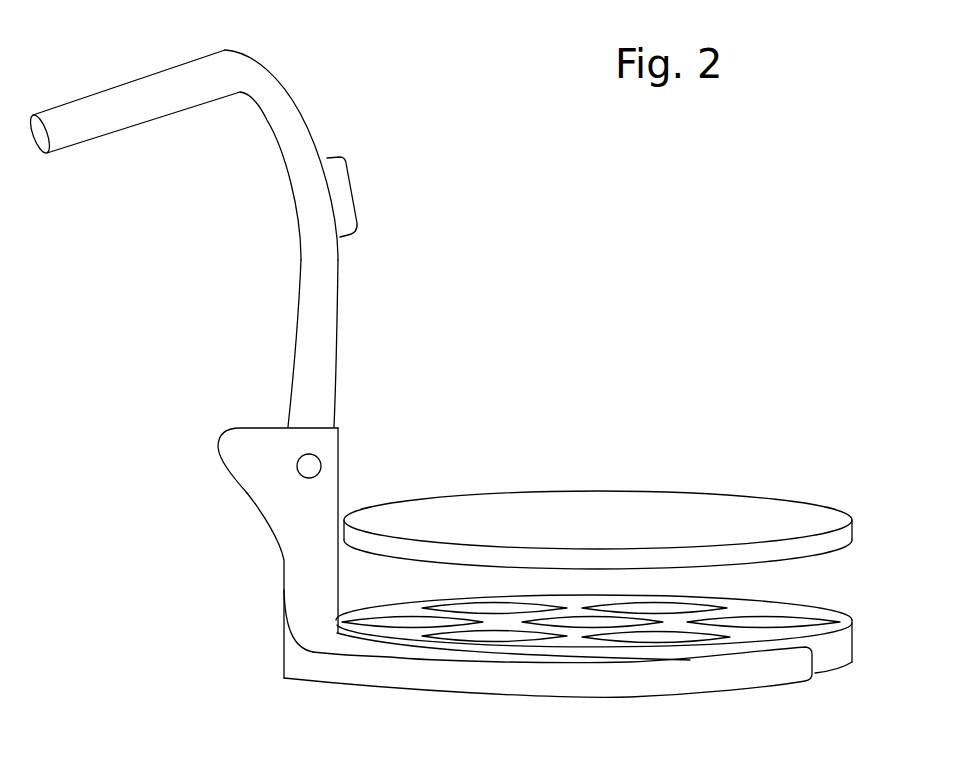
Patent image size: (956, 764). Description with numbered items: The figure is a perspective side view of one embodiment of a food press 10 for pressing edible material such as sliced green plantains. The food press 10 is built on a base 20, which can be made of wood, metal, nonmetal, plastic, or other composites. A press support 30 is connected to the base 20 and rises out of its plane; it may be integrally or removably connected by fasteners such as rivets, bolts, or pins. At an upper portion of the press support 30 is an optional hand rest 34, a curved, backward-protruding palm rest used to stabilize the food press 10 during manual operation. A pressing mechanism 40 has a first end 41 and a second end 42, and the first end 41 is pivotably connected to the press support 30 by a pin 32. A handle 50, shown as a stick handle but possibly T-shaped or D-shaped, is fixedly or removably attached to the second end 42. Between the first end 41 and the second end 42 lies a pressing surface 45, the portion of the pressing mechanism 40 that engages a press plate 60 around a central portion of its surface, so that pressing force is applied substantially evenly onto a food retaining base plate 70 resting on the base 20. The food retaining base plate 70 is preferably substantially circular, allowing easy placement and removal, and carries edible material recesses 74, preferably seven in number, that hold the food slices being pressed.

The food press 10 is at (675, 198).
The base 20 is at (680, 692).
The press support 30 is at (251, 524).
The pin 32 is at (316, 466).
The hand rest 34 is at (230, 427).
The pressing mechanism 40 is at (277, 217).
The first end 41 is at (356, 343).
The second end 42 is at (281, 134).
The pressing surface 45 is at (352, 189).
The handle 50 is at (97, 103).
The press plate 60 is at (723, 495).
The food retaining base plate 70 is at (847, 620).
The edible material recesses 74 is at (653, 612).